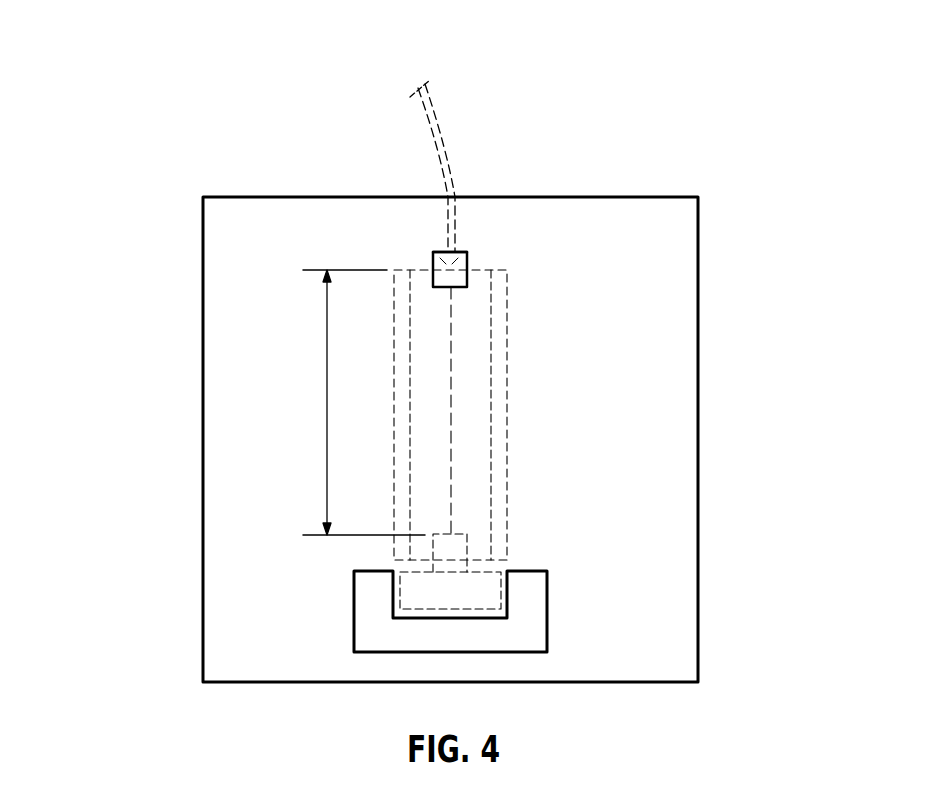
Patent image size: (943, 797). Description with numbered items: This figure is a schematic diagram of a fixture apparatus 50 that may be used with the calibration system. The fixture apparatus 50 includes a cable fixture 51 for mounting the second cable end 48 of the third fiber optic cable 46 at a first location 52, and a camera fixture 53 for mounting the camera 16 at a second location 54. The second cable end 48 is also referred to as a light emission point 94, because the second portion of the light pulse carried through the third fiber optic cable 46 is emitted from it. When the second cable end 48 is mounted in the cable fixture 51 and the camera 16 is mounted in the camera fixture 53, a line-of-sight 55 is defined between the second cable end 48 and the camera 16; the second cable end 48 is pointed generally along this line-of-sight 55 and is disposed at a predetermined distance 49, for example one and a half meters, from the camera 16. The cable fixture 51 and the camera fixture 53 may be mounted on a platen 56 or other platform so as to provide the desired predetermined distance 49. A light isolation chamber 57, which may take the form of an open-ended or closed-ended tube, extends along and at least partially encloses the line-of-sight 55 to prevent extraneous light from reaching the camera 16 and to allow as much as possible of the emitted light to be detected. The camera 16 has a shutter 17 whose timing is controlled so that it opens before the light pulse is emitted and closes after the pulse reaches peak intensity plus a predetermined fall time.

The fixture apparatus 50 is at (168, 51).
The third fiber optic cable 46 is at (442, 116).
The second cable end 48 is at (467, 253).
The light emission point 94 is at (450, 269).
The cable fixture 51 is at (433, 253).
The first location 52 is at (560, 271).
The platen 56 is at (680, 433).
The light isolation chamber 57 is at (498, 390).
The line-of-sight 55 is at (451, 443).
The predetermined distance 49 is at (326, 446).
The shutter 17 is at (458, 543).
The camera 16 is at (475, 580).
The camera fixture 53 is at (367, 618).
The second location 54 is at (566, 589).